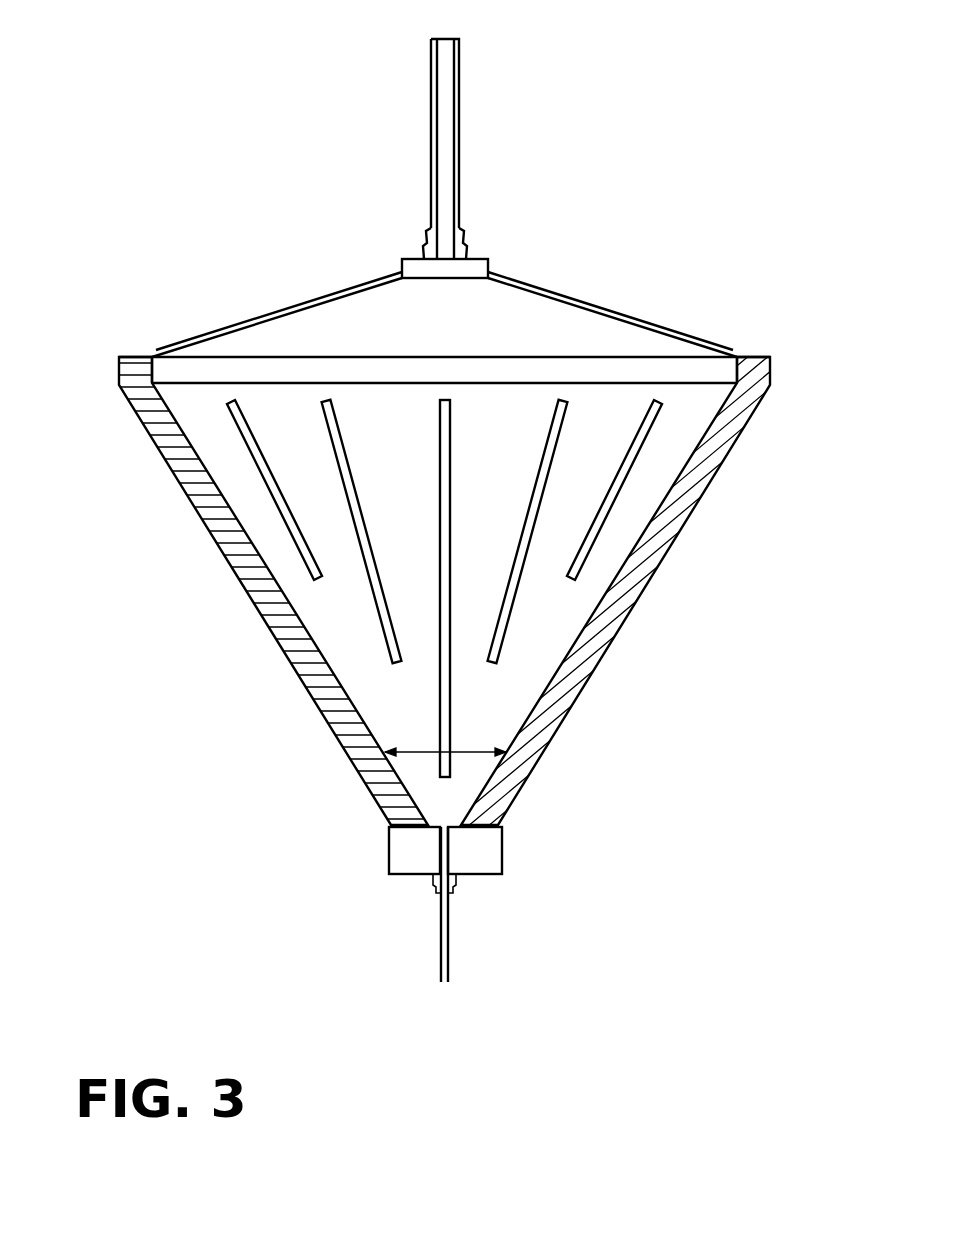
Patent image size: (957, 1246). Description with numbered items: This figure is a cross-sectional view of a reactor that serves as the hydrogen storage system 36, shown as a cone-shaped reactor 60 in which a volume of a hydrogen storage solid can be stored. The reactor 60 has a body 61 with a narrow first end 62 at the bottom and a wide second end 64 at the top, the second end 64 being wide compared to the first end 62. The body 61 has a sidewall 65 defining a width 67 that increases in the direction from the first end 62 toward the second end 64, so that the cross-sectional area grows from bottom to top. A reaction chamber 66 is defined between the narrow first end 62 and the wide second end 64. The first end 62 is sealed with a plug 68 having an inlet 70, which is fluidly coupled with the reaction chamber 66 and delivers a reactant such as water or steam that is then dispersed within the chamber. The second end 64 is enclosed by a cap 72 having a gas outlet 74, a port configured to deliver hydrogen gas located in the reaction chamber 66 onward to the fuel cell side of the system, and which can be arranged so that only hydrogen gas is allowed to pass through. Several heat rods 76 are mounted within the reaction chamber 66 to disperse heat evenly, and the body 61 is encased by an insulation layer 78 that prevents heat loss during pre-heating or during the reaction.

The hydrogen storage system 36 is at (125, 167).
The cone-shaped reactor 60 is at (217, 323).
The body 61 is at (203, 407).
The narrow first end 62 is at (503, 822).
The wide second end 64 is at (770, 372).
The sidewall 65 is at (250, 537).
The reaction chamber 66 is at (506, 420).
The width 67 is at (417, 755).
The plug 68 is at (408, 875).
The inlet 70 is at (448, 955).
The cap 72 is at (578, 298).
The gas outlet 74 is at (458, 115).
The heat rods 76 is at (375, 610).
The insulation layer 78 is at (698, 468).